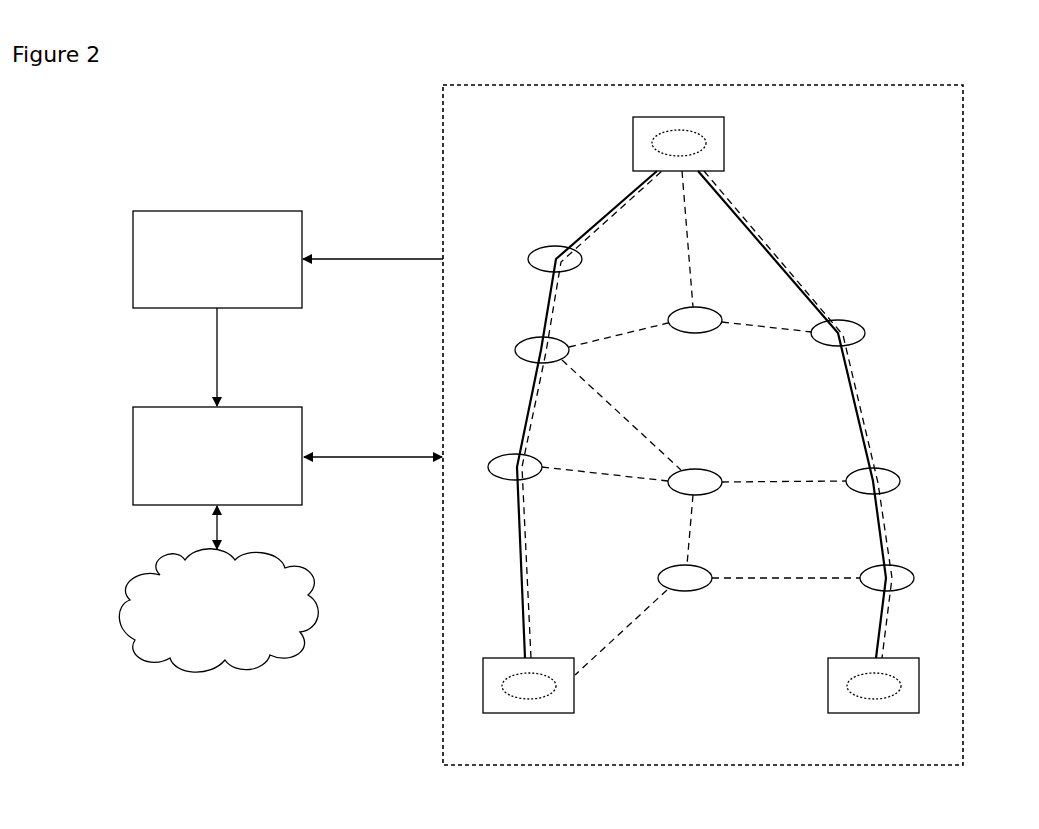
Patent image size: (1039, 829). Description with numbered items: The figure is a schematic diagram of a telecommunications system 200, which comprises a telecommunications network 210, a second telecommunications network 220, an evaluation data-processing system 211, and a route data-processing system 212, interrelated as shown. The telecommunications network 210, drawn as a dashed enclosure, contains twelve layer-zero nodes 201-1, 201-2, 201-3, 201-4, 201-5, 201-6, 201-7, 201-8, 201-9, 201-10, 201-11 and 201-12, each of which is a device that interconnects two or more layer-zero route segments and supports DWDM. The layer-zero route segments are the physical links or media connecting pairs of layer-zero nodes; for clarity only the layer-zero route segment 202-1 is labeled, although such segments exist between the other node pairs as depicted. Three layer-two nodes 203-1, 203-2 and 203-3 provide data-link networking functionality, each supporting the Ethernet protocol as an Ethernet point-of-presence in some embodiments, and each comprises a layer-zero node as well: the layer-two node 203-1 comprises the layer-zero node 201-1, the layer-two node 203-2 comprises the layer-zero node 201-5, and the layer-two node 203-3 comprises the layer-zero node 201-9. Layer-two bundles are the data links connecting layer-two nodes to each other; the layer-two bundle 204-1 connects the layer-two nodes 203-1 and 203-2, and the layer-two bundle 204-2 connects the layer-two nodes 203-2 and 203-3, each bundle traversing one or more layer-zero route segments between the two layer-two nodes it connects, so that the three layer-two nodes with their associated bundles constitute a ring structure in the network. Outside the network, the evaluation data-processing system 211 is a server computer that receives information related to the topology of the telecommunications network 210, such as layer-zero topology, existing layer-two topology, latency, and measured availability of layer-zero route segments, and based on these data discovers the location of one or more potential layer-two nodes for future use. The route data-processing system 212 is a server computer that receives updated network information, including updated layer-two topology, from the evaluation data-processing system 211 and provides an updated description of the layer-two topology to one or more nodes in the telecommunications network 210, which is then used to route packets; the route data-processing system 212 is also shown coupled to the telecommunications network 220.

The telecommunications system 200 is at (177, 106).
The telecommunications network 210 is at (669, 425).
The evaluation data-processing system 211 is at (217, 259).
The route data-processing system 212 is at (217, 456).
The telecommunications network 220 is at (218, 610).
The layer-0 node 201-1 is at (502, 664).
The layer-0 node 201-2 is at (551, 455).
The layer-0 node 201-3 is at (576, 336).
The layer-0 node 201-4 is at (526, 246).
The layer-0 node 201-5 is at (634, 149).
The layer-0 node 201-6 is at (871, 320).
The layer-0 node 201-7 is at (901, 464).
The layer-0 node 201-8 is at (852, 550).
The layer-0 node 201-9 is at (848, 663).
The layer-0 node 201-10 is at (647, 564).
The layer-0 node 201-11 is at (733, 468).
The layer-0 node 201-12 is at (732, 306).
The layer-0 route segment 202-1 is at (605, 489).
The layer-2 node 203-1 is at (551, 667).
The layer-2 node 203-2 is at (719, 144).
The layer-2 node 203-3 is at (830, 685).
The layer-2 bundle 204-1 is at (557, 414).
The layer-2 bundle 204-2 is at (795, 414).